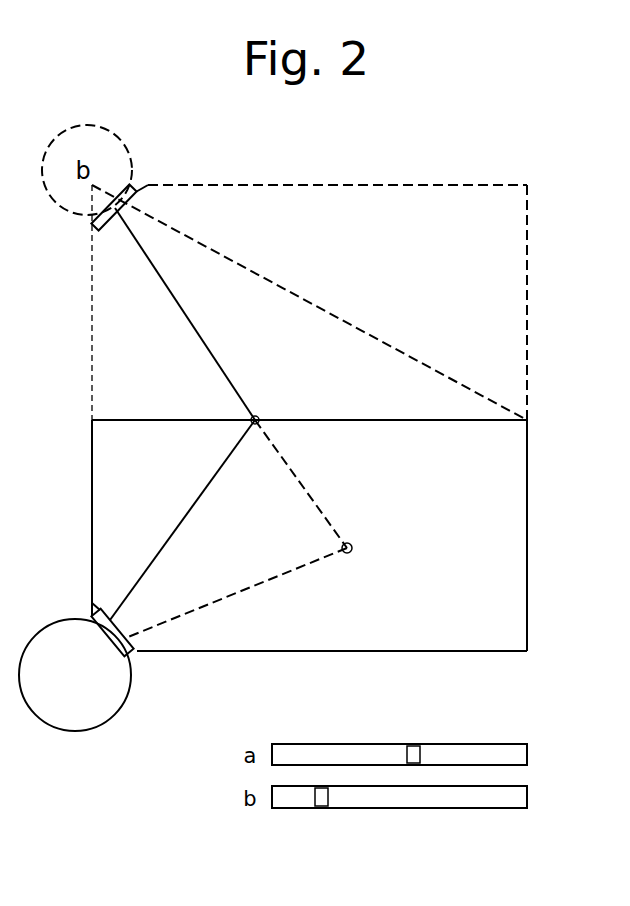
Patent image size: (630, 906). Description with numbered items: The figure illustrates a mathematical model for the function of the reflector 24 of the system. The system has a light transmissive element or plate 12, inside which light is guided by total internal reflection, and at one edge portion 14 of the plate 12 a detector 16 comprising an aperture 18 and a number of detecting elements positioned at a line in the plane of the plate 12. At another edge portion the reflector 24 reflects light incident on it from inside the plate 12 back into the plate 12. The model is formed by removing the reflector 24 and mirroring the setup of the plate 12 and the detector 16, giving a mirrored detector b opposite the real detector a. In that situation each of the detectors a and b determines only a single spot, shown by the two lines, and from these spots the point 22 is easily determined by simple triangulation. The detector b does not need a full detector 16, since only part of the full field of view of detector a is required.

The light transmissive element or plate 12 is at (440, 645).
The edge portion 14 is at (133, 650).
The detector 16 is at (117, 725).
The aperture 18 is at (90, 617).
The point 22 is at (362, 545).
The reflector 24 is at (117, 414).